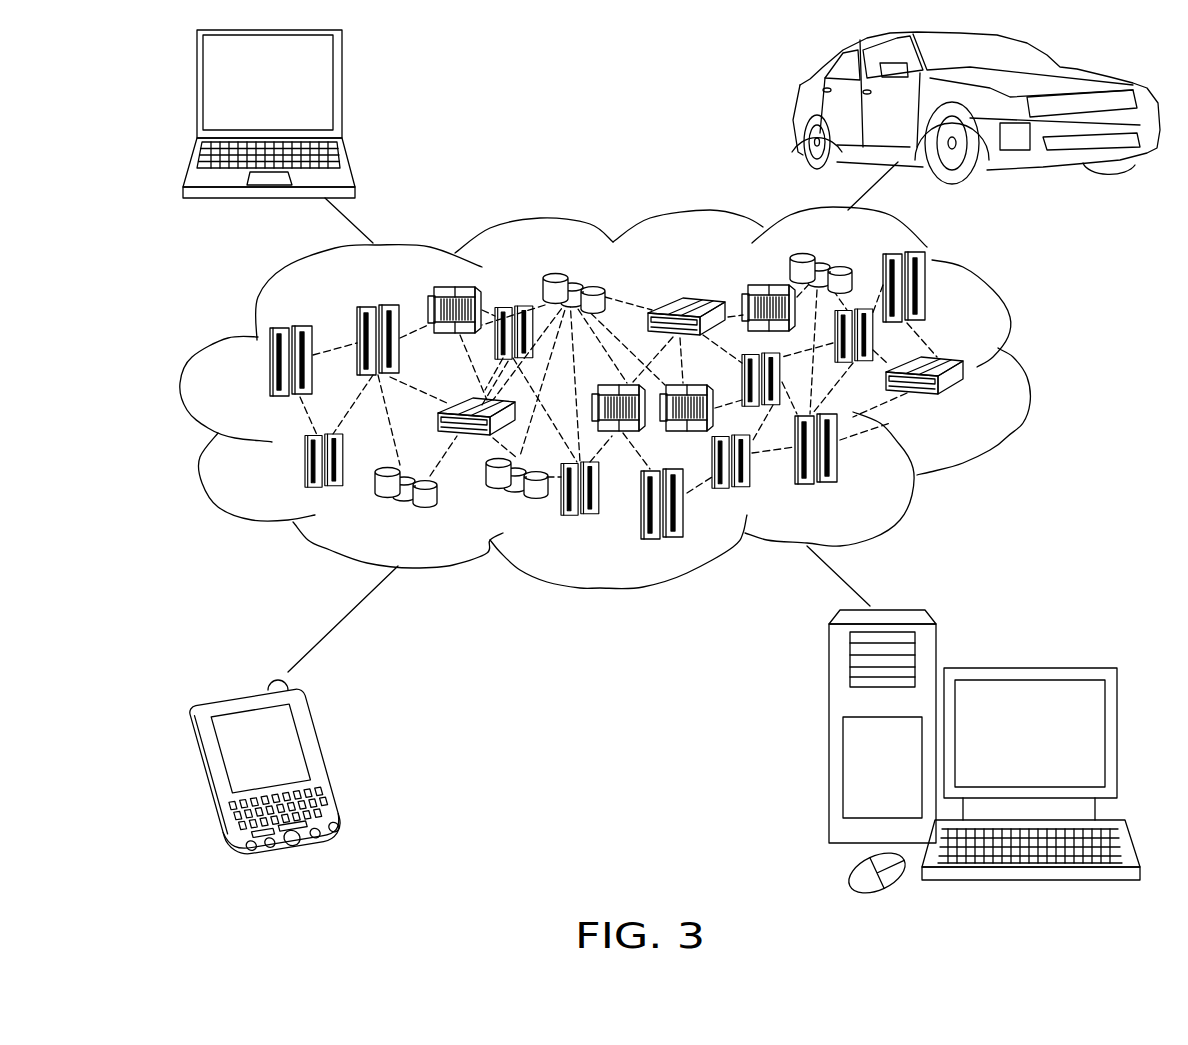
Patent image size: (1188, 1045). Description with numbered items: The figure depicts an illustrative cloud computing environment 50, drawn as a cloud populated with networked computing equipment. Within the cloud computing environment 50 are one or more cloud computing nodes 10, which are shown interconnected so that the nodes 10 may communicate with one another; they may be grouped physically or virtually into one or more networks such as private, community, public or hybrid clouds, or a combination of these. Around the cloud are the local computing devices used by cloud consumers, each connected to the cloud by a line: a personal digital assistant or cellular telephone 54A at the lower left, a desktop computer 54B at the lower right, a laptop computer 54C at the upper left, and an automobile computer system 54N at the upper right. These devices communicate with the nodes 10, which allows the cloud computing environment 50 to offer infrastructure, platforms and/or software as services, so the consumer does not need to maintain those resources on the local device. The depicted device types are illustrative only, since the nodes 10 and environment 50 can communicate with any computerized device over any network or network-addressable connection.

The cloud computing node 10 is at (970, 404).
The cloud computing environment 50 is at (1028, 373).
The personal digital assistant (PDA) or cellular telephone 54A is at (333, 766).
The desktop computer 54B is at (1030, 668).
The laptop computer 54C is at (342, 95).
The automobile computer system 54N is at (798, 114).